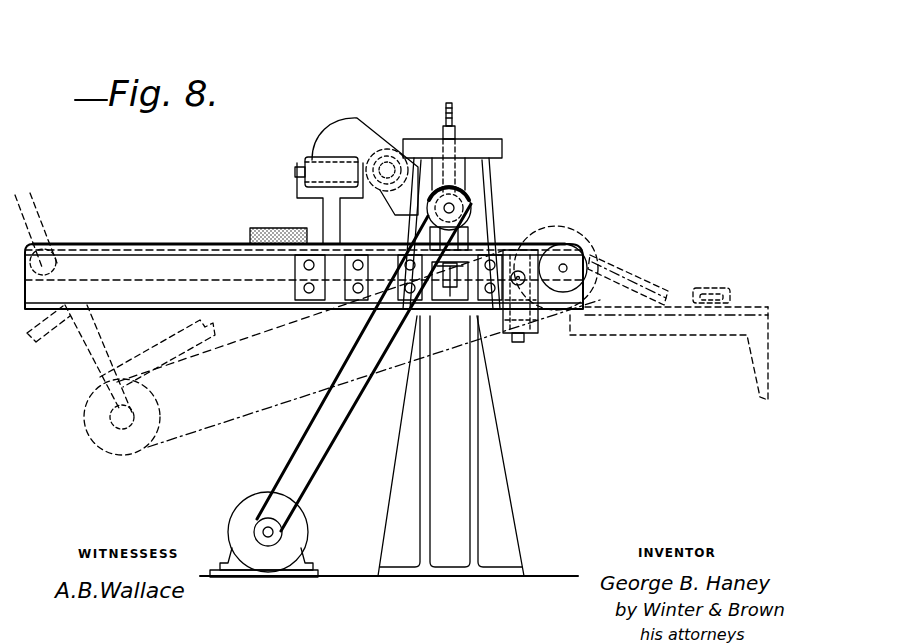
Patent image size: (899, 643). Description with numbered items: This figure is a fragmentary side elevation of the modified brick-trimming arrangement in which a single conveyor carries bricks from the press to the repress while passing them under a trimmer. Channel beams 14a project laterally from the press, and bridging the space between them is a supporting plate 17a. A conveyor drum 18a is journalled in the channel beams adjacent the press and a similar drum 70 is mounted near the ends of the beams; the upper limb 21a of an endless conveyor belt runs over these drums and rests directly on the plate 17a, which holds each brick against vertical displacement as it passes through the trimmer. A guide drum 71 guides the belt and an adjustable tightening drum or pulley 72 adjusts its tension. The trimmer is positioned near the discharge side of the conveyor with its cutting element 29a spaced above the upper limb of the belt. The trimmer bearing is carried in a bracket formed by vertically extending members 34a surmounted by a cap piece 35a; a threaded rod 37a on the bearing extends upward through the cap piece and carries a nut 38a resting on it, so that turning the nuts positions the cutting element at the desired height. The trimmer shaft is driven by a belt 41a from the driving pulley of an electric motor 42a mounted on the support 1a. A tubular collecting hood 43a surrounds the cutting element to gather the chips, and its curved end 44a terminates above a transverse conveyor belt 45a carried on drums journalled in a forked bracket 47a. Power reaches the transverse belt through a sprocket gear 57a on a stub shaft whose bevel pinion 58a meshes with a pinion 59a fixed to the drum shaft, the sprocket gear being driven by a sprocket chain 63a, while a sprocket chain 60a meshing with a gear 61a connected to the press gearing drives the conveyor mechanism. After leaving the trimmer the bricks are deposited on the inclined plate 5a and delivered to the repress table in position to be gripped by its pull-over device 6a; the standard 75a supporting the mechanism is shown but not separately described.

The support 1a is at (560, 567).
The inclined plate 5a is at (627, 267).
The pull-over device 6a is at (713, 290).
The channel beams 14a is at (187, 270).
The supporting plate 17a is at (130, 244).
The conveyor drum 18a is at (63, 250).
The upper limb of endless conveyor belt 21a is at (107, 244).
The cutting element 29a is at (487, 200).
The vertically extending members 34a is at (503, 165).
The cap piece 35a is at (468, 138).
The rod 37a is at (440, 139).
The nut 38a is at (452, 136).
The belt 41a is at (317, 417).
The electric motor 42a is at (292, 540).
The collecting hood 43a is at (420, 206).
The curved end of hood 44a is at (323, 130).
The conveyor belt 45a is at (313, 157).
The forked bracket 47a is at (322, 205).
The sprocket gear 57a is at (400, 150).
The bevel pinion 58a is at (395, 152).
The pinion 59a is at (375, 150).
The sprocket chain 60a is at (272, 328).
The gear 61a is at (125, 455).
The sprocket chain 63a is at (512, 215).
The drum 70 is at (558, 232).
The guide drum 71 is at (455, 300).
The tightening drum or pulley 72 is at (542, 333).
The standard 75a is at (448, 453).